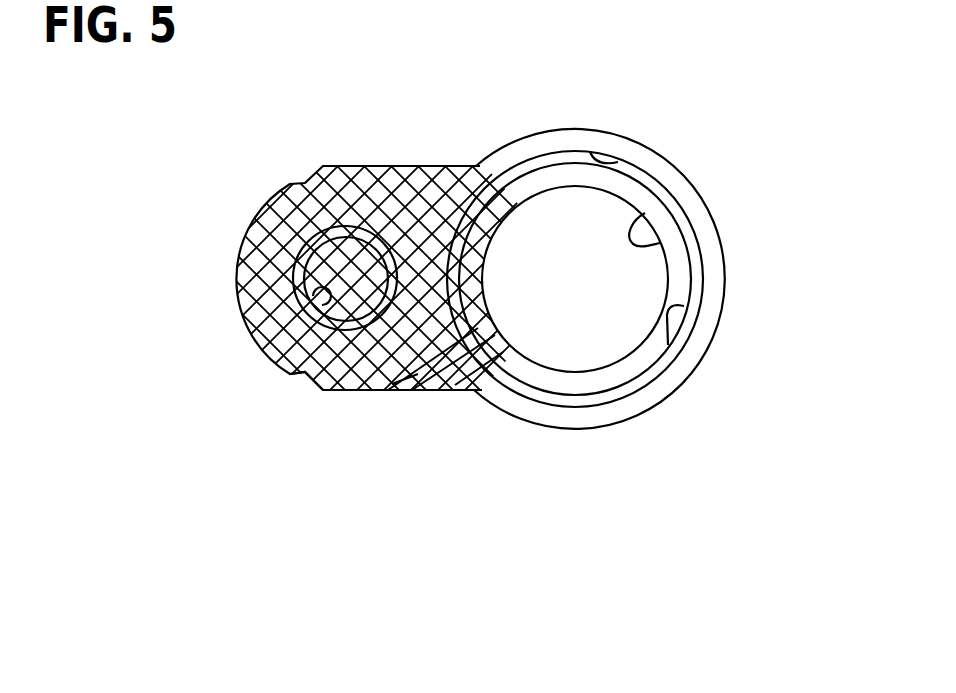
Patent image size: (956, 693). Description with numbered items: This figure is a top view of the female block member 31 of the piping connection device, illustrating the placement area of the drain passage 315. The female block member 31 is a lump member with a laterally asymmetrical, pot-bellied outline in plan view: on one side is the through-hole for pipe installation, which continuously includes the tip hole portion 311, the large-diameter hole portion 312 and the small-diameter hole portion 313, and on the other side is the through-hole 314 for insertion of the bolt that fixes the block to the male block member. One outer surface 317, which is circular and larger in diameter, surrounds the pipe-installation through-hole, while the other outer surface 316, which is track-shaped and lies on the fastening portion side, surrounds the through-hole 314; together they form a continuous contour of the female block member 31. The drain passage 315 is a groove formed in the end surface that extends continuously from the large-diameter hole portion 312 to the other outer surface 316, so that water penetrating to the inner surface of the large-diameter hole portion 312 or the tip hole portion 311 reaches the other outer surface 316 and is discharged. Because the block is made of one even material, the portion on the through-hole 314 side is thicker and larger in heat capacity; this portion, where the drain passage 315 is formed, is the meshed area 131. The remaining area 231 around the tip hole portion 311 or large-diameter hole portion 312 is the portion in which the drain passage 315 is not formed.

The female block member 31 is at (242, 242).
The area 131 is at (373, 193).
The tip hole portion 311 is at (618, 162).
The area 231 is at (632, 192).
The small-diameter hole portion 313 is at (660, 243).
The one outer surface 317 is at (722, 280).
The large-diameter hole portion 312 is at (668, 345).
The through-hole 314 is at (268, 355).
The drain passage 315 is at (407, 392).
The other outer surface 316 is at (452, 392).